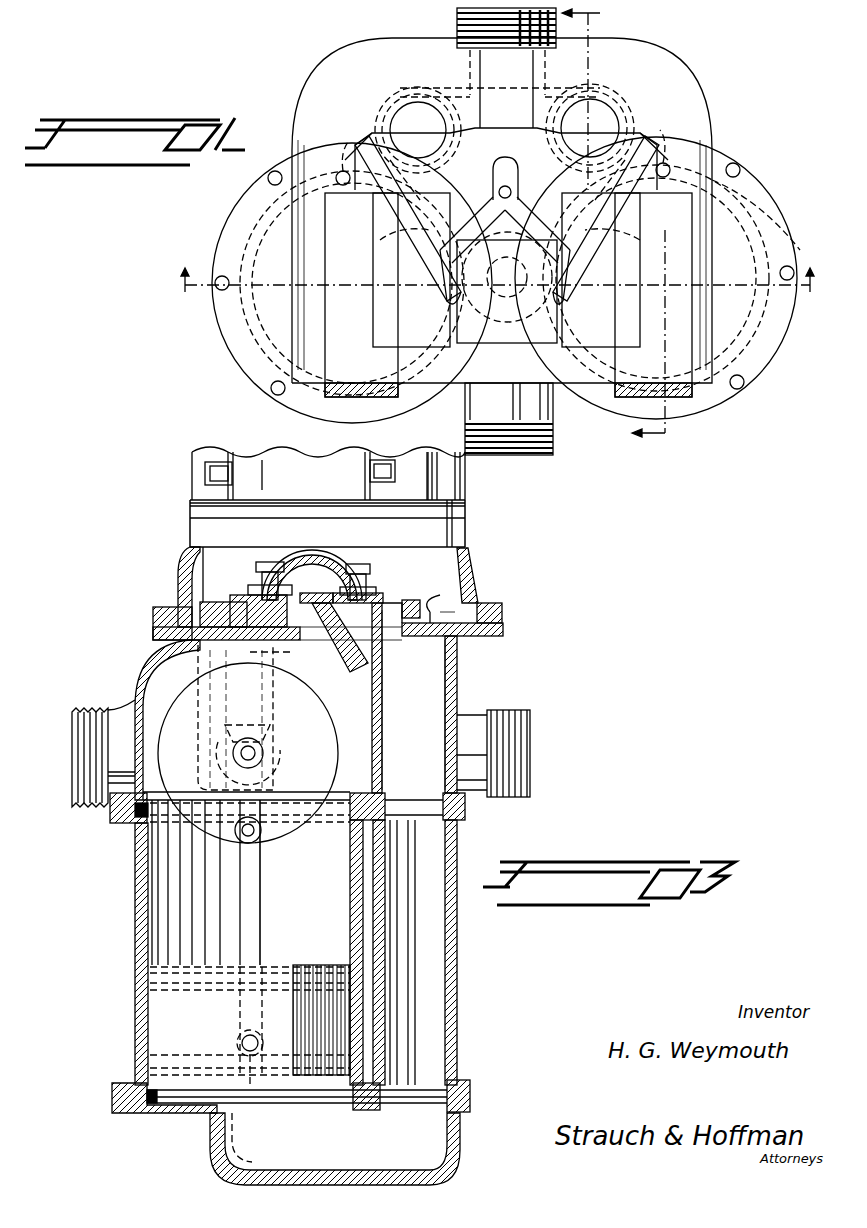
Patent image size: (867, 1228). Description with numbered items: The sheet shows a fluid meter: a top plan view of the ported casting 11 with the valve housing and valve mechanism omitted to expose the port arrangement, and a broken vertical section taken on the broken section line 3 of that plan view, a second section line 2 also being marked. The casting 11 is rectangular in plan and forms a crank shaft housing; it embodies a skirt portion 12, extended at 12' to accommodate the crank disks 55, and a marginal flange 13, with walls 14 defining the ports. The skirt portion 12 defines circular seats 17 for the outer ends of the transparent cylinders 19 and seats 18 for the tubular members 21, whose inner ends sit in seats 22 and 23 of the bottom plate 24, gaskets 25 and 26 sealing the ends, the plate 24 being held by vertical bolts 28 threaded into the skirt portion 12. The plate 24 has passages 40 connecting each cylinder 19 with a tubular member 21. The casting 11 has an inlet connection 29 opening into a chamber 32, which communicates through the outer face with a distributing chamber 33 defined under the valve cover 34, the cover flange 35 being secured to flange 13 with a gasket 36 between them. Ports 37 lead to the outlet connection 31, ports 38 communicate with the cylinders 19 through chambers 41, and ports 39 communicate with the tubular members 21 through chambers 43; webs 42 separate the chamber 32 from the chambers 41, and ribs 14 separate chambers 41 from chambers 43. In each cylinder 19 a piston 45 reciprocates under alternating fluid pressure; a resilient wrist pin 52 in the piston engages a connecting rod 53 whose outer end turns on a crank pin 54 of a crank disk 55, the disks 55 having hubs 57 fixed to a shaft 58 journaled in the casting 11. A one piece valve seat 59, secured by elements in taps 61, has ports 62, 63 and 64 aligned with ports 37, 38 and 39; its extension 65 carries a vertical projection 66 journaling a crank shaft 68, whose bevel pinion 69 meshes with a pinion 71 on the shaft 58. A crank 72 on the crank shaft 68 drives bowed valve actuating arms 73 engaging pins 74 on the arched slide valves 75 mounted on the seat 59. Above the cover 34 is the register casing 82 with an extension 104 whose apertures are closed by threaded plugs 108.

In FIG. 1, the section line 2- 2 is at (497, 290).
In FIG. 1, the section line 3- 3 is at (613, 224).
In FIG. 1, the ported casting 11 is at (502, 210).
In FIG. 3, the ported casting 11 is at (458, 672).
In FIG. 1, the skirt portion 12 is at (664, 215).
In FIG. 3, the skirt portion 12 is at (440, 698).
In FIG. 1, the extension of skirt portion 12' is at (514, 420).
In FIG. 1, the marginal flange 13 is at (715, 155).
In FIG. 3, the marginal flange 13 is at (505, 633).
In FIG. 1, the port walls 14 is at (508, 178).
In FIG. 3, the port walls 14 is at (383, 715).
In FIG. 3, the circular seats 17 is at (355, 795).
In FIG. 3, the circular seats 18 is at (440, 800).
In FIG. 1, the transparent cylinders 19 is at (215, 282).
In FIG. 3, the transparent cylinders 19 is at (350, 878).
In FIG. 1, the tubular members 21 is at (540, 92).
In FIG. 3, the tubular members 21 is at (460, 845).
In FIG. 3, the circular seats 22 is at (135, 1083).
In FIG. 3, the circular seats 23 is at (460, 1080).
In FIG. 3, the bottom plate 24 is at (165, 1105).
In FIG. 3, the gaskets 25 is at (160, 1085).
In FIG. 3, the gaskets 26 is at (428, 1080).
In FIG. 1, the bolts 28 is at (270, 390).
In FIG. 1, the inlet connection 29 is at (553, 452).
In FIG. 3, the inlet connection 29 is at (107, 710).
In FIG. 1, the outlet connection 31 is at (457, 20).
In FIG. 3, the outlet connection 31 is at (525, 738).
In FIG. 1, the chamber 32 is at (507, 287).
In FIG. 3, the distributing chamber 33 is at (452, 605).
In FIG. 3, the valve cover 34 is at (470, 580).
In FIG. 3, the flange 35 is at (498, 606).
In FIG. 3, the gasket 36 is at (503, 625).
In FIG. 3, the ports 37 is at (340, 637).
In FIG. 1, the ports 38 is at (507, 196).
In FIG. 3, the ports 38 is at (272, 622).
In FIG. 1, the ports 39 is at (506, 137).
In FIG. 3, the ports 39 is at (392, 620).
In FIG. 1, the passages 40 is at (504, 280).
In FIG. 3, the passages 40 is at (335, 1149).
In FIG. 3, the chambers 41 is at (242, 720).
In FIG. 1, the ribs or webs 42 is at (552, 270).
In FIG. 3, the chambers 43 is at (413, 700).
In FIG. 3, the piston 45 is at (295, 985).
In FIG. 3, the resilient wrist pin 52 is at (245, 1036).
In FIG. 3, the connecting rod 53 is at (265, 882).
In FIG. 3, the crank pin 54 is at (258, 822).
In FIG. 1, the crank disk 55 is at (504, 280).
In FIG. 3, the crank disk 55 is at (322, 735).
In FIG. 1, the hub portions 57 is at (507, 220).
In FIG. 3, the shaft 58 is at (263, 753).
In FIG. 3, the one piece valve seat 59 is at (205, 600).
In FIG. 1, the taps 61 is at (504, 151).
In FIG. 3, the ports 62 is at (358, 606).
In FIG. 3, the ports 63 is at (315, 606).
In FIG. 3, the ports 64 is at (420, 606).
In FIG. 1, the extension 65 is at (440, 392).
In FIG. 3, the extension 65 is at (175, 612).
In FIG. 3, the vertical projection 66 is at (198, 682).
In FIG. 3, the crank shaft 68 is at (282, 658).
In FIG. 3, the bevel pinion 69 is at (265, 728).
In FIG. 3, the pinion 71 is at (222, 750).
In FIG. 3, the crank 72 is at (272, 570).
In FIG. 3, the valve actuating arms 73 is at (315, 568).
In FIG. 3, the pins 74 is at (362, 570).
In FIG. 3, the slide valves 75 is at (345, 560).
In FIG. 3, the casing 82 is at (462, 478).
In FIG. 3, the extension of casing 104 is at (257, 470).
In FIG. 3, the threaded plugs 108 is at (205, 472).